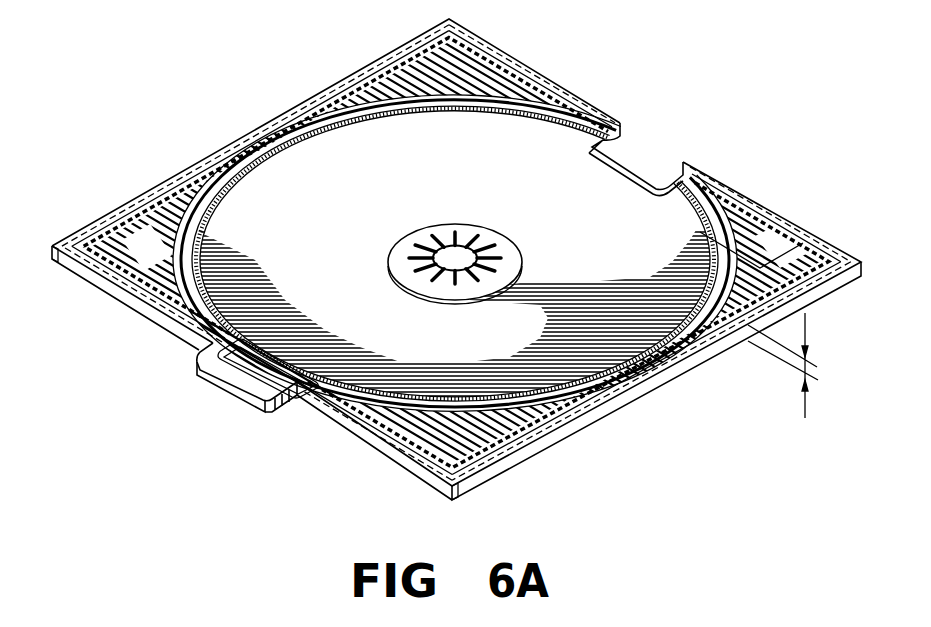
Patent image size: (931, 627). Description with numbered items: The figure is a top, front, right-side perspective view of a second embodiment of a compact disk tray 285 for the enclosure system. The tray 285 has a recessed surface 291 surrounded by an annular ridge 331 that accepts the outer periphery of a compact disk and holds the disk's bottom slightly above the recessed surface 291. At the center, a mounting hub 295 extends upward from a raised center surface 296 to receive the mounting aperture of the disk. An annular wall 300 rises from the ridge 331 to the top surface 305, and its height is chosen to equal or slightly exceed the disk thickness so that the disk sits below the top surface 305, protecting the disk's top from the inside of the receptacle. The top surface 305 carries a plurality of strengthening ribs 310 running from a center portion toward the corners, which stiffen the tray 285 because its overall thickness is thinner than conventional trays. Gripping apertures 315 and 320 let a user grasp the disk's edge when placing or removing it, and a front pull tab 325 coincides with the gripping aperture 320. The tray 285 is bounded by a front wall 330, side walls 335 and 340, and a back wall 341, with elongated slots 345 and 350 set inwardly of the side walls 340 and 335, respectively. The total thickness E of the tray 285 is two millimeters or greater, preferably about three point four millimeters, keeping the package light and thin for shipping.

The compact disk tray 285 is at (333, 62).
The recessed surface 291 is at (476, 350).
The mounting hub 295 is at (486, 236).
The raised center surface 296 is at (518, 268).
The annular wall 300 is at (218, 195).
The top surface 305 is at (250, 137).
The strengthening ribs 310 is at (756, 216).
The gripping aperture 315 is at (648, 152).
The gripping aperture 320 is at (245, 375).
The front pull tab 325 is at (265, 410).
The front wall 330 is at (153, 313).
The annular ridge 331 is at (200, 248).
The side wall 335 is at (553, 443).
The side wall 340 is at (123, 200).
The back wall 341 is at (540, 72).
The elongated slot 345 is at (54, 268).
The elongated slot 350 is at (448, 505).
The total thickness E is at (791, 365).